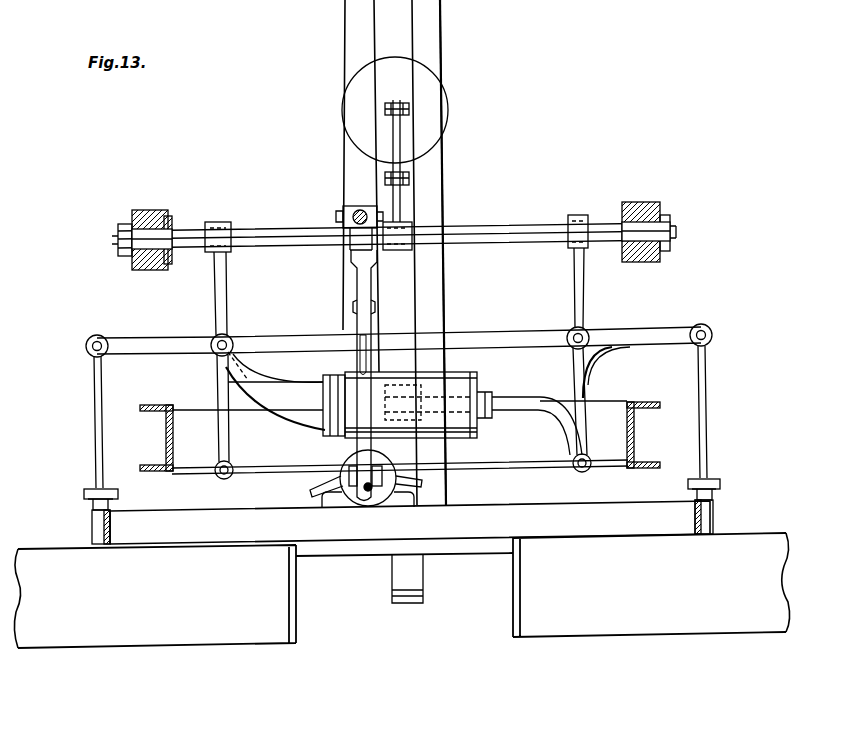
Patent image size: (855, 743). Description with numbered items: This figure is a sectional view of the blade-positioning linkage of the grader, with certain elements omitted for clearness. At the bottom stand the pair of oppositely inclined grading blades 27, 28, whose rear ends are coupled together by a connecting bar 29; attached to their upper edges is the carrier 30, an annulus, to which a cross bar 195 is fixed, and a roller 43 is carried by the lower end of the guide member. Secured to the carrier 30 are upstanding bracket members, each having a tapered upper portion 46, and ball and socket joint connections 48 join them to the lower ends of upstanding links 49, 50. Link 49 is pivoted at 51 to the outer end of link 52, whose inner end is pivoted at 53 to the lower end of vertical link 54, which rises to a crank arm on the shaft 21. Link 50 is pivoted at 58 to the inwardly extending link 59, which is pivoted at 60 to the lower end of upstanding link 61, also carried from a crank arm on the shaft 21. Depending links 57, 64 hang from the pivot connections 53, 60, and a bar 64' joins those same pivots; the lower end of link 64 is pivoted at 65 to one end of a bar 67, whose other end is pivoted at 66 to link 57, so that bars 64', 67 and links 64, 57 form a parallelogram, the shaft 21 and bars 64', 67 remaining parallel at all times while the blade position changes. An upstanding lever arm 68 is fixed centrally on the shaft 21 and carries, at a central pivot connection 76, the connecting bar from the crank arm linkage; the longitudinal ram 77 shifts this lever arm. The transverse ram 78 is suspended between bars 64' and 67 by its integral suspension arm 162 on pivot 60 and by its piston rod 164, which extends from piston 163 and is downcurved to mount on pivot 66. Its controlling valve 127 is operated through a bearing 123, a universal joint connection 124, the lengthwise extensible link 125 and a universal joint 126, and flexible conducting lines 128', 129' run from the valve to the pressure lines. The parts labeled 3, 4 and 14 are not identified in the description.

The right bearing block 3 is at (648, 202).
The left bearing block 4 is at (145, 210).
The guide bracket 14 is at (165, 440).
The shaft 21 is at (492, 226).
The grading blade 27 is at (730, 605).
The grading blade 28 is at (58, 615).
The connecting bar 29 is at (470, 547).
The carrier 30 is at (95, 530).
The roller 43 is at (420, 598).
The tapered upper portion 46 is at (92, 508).
The ball and socket joint connection 48 is at (88, 498).
The link 49 is at (707, 425).
The link 50 is at (95, 388).
The pivot connection 51 is at (712, 330).
The link 52 is at (650, 330).
The pivot connection 53 is at (585, 330).
The vertical link 54 is at (582, 268).
The depending link 57 is at (592, 375).
The pivot connection 58 is at (95, 335).
The inwardly extending link 59 is at (148, 340).
The pivot connection 60 is at (228, 340).
The upstanding link 61 is at (226, 278).
The depending link 64 is at (199, 408).
The bar 64' is at (400, 319).
The pivot connection 65 is at (215, 478).
The pivot connection 66 is at (590, 470).
The bar 67 is at (509, 468).
The lever arm 68 is at (400, 150).
The pivot connection 76 is at (407, 178).
The ram 77 is at (428, 83).
The ram 78 is at (452, 385).
The bearing 123 is at (362, 206).
The universal joint connection 124 is at (350, 215).
The lengthwise extensible link 125 is at (357, 279).
The universal joint 126 is at (313, 492).
The controlling valve 127 is at (345, 462).
The flexible conducting line 128' is at (445, 482).
The flexible conducting line 129' is at (400, 481).
The suspension arm 162 is at (280, 355).
The piston 163 is at (400, 392).
The piston rod 164 is at (530, 398).
The cross bar 195 is at (333, 525).